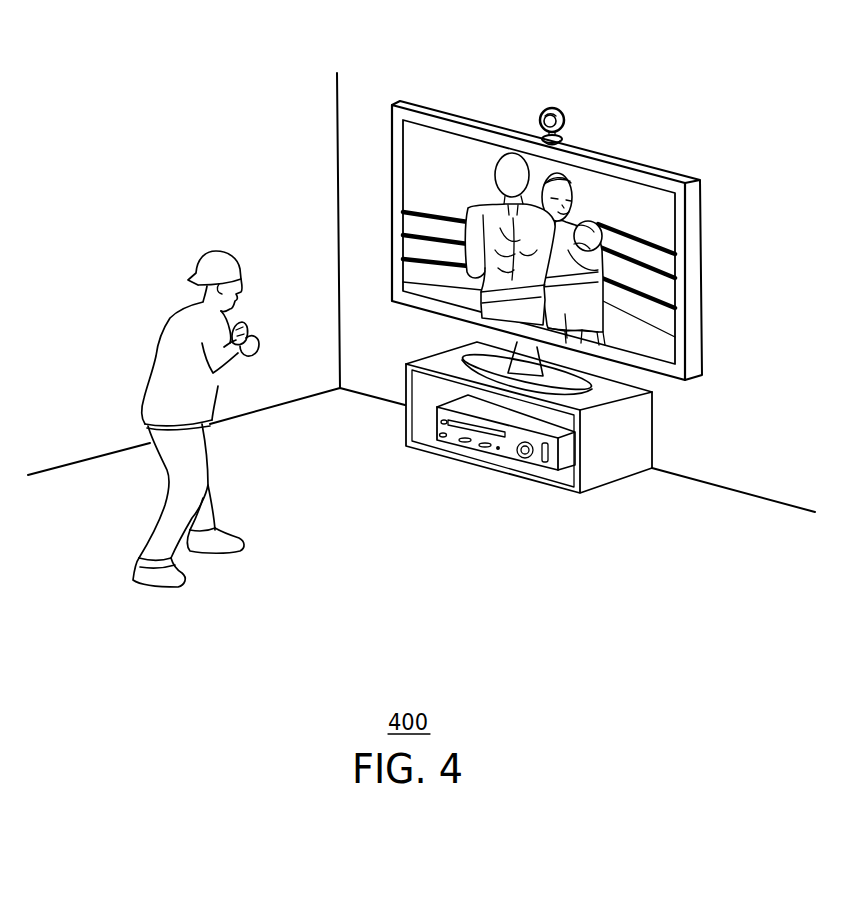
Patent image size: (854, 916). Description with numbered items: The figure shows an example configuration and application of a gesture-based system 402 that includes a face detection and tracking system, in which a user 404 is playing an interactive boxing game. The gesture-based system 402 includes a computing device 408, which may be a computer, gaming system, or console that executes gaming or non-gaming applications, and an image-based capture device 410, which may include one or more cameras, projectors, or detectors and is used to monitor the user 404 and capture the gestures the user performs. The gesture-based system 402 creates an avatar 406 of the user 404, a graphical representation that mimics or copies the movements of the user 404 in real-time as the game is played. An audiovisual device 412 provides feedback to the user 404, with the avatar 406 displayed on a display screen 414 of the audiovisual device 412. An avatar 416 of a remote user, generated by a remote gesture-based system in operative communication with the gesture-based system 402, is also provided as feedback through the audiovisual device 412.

The gesture-based system 402 is at (573, 50).
The user 404 is at (208, 497).
The avatar 406 is at (480, 197).
The computing device 408 is at (508, 455).
The image-based capture device 410 is at (552, 107).
The audiovisual device 412 is at (702, 232).
The display screen 414 is at (675, 335).
The avatar of the remote user 416 is at (572, 195).